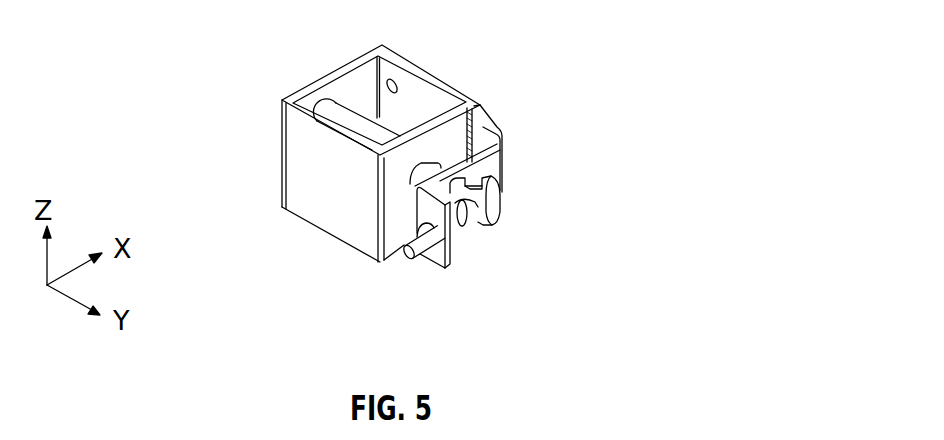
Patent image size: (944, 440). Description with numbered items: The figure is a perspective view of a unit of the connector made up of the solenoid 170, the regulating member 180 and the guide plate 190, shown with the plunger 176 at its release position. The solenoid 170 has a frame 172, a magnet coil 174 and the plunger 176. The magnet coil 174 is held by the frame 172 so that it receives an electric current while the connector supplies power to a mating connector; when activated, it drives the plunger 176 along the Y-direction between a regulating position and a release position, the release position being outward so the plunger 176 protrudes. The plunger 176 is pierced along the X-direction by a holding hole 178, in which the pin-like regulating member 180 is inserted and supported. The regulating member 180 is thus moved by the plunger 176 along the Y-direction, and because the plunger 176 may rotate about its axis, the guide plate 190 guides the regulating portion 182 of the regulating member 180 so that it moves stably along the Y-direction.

The solenoid 170 is at (329, 153).
The frame 172 is at (295, 138).
The magnet coil 174 is at (343, 108).
The plunger 176 is at (498, 212).
The holding hole 178 is at (458, 228).
The regulating member 180 is at (406, 287).
The regulating portion 182 is at (419, 253).
The guide plate 190 is at (453, 261).